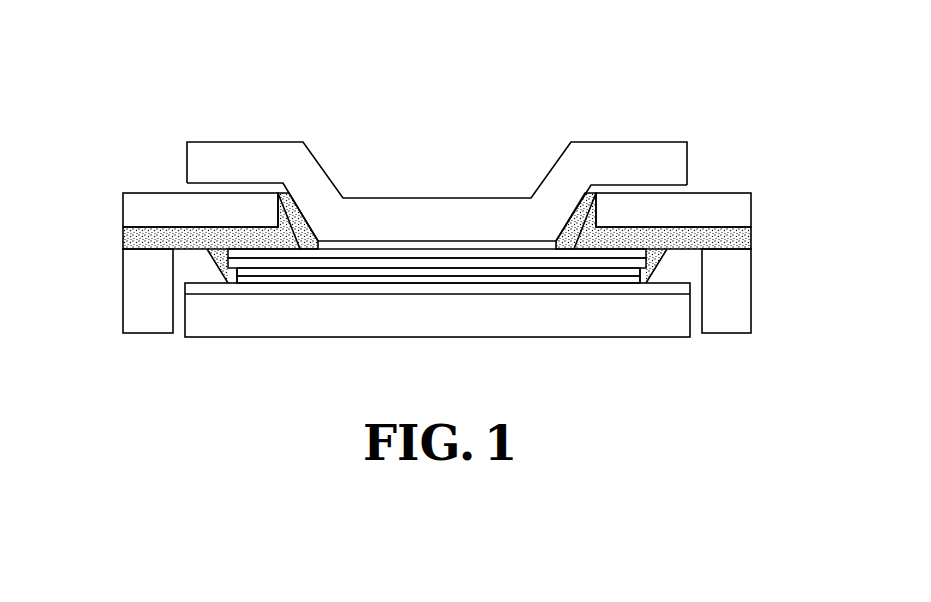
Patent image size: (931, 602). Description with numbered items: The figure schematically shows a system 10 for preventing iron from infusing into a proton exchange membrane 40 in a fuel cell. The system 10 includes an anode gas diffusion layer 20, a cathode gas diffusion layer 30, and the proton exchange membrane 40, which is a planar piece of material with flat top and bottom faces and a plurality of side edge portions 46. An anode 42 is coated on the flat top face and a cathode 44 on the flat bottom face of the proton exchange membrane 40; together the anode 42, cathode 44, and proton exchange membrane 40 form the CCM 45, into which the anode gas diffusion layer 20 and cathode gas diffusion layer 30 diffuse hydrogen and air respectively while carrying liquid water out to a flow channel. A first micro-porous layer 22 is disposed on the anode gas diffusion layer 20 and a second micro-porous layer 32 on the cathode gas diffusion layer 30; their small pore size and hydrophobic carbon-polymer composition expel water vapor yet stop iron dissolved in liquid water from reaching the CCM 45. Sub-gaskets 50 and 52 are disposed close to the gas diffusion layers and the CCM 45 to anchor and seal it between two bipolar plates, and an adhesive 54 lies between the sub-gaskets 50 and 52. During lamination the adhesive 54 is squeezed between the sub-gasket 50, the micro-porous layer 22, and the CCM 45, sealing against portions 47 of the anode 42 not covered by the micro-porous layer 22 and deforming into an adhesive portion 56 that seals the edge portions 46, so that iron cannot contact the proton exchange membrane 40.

The system 10 is at (203, 52).
The anode gas diffusion layer 20 is at (627, 148).
The first micro-porous layer 22 is at (677, 186).
The cathode gas diffusion layer 30 is at (465, 322).
The second micro-porous layer 32 is at (528, 294).
The proton exchange membrane 40 is at (315, 267).
The anode 42 is at (356, 258).
The cathode 44 is at (272, 283).
The CCM 45 is at (440, 266).
The side edge portions 46 is at (237, 283).
The portions of the anode 47 is at (292, 232).
The sub-gasket 50 is at (130, 210).
The sub-gasket 52 is at (130, 287).
The adhesive 54 is at (130, 238).
The adhesive portion 56 is at (213, 256).